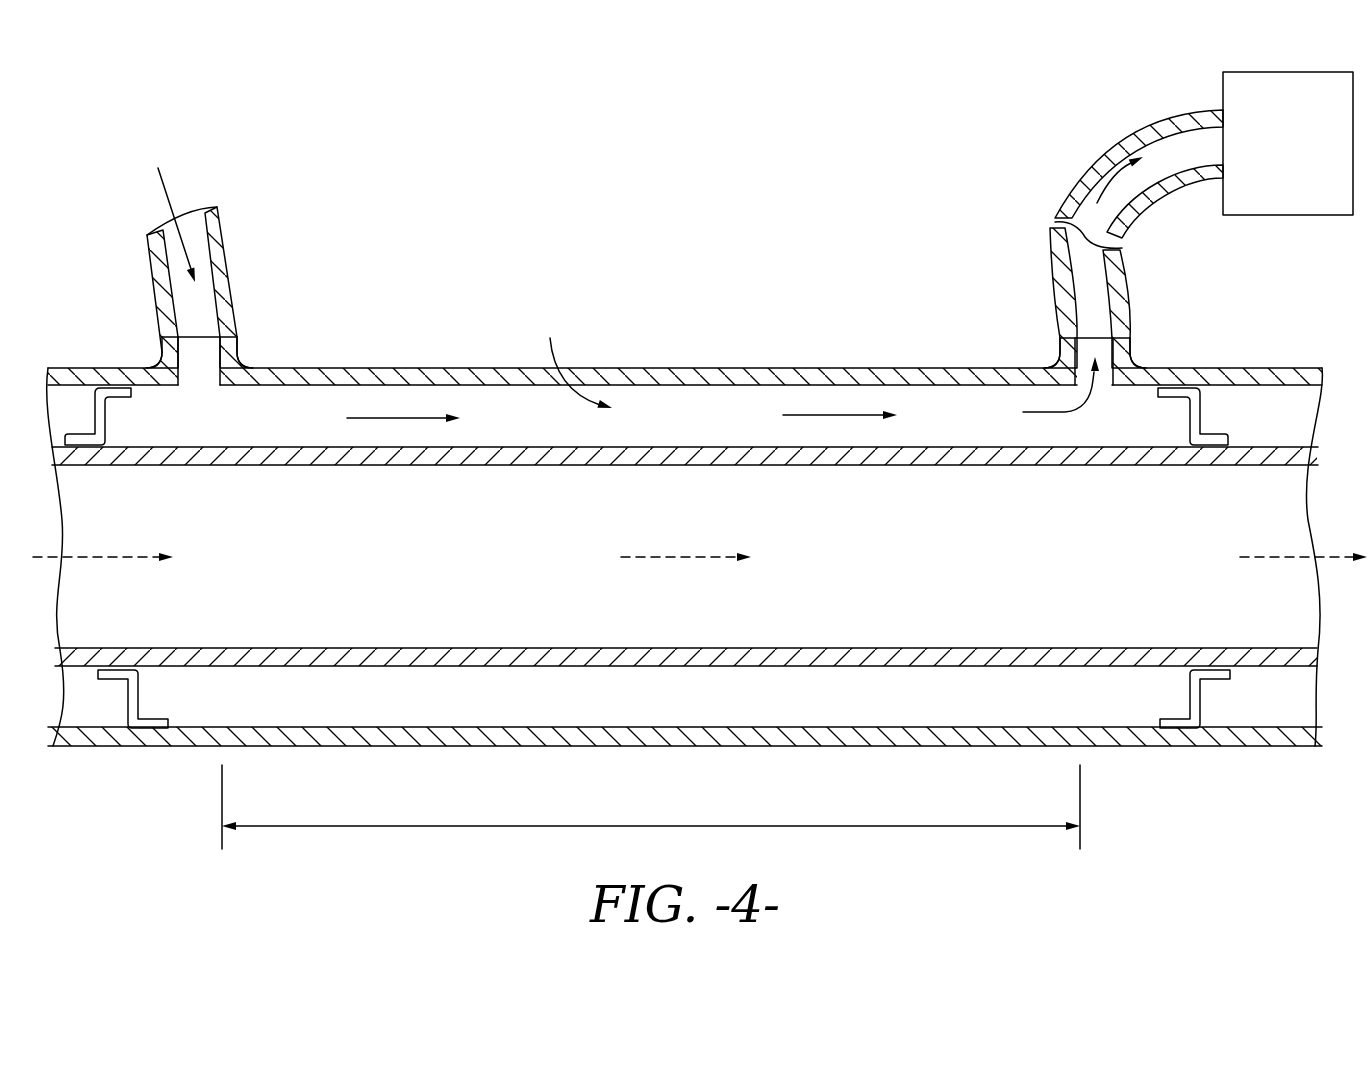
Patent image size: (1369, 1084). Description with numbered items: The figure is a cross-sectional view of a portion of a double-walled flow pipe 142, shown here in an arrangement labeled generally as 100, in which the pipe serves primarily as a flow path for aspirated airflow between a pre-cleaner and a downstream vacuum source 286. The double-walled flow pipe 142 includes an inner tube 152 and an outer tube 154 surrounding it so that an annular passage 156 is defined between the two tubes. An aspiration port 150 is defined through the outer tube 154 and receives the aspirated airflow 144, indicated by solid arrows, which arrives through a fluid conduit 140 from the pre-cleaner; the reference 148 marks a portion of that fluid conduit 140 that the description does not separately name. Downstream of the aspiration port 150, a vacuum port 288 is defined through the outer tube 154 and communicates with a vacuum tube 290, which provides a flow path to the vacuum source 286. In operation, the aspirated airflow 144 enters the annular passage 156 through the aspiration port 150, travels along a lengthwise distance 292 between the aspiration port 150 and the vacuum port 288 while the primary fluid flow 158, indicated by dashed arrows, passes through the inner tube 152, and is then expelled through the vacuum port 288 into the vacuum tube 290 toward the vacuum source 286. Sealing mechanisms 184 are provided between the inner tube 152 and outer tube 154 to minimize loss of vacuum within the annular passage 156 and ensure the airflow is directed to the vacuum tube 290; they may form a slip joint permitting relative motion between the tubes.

The heat exchanger assembly 100 is at (418, 156).
The fluid conduit 140 is at (184, 282).
The double-walled flow pipe 142 is at (661, 312).
The aspirated airflow 144 is at (173, 187).
The inlet wall 148 is at (163, 275).
The aspiration port 150 is at (237, 350).
The inner tube 152 is at (405, 455).
The outer tube 154 is at (727, 368).
The annular passage 156 is at (572, 357).
The primary fluid flow 158 is at (98, 560).
The sealing mechanisms 184 is at (95, 410).
The vacuum source 286 is at (1318, 158).
The vacuum port 288 is at (1133, 350).
The vacuum tube 290 is at (1106, 239).
The lengthwise distance 292 is at (460, 830).